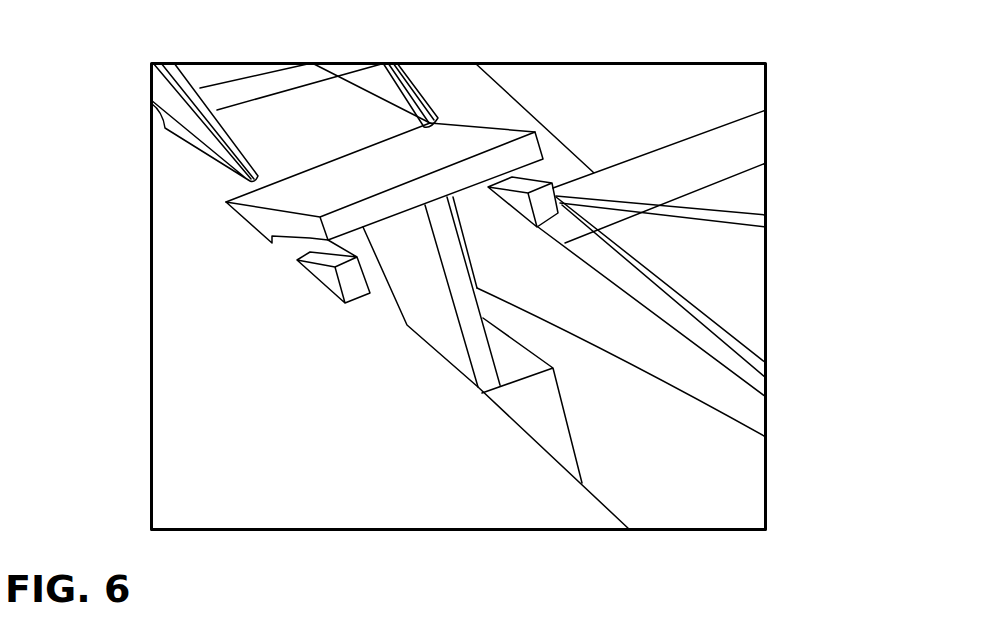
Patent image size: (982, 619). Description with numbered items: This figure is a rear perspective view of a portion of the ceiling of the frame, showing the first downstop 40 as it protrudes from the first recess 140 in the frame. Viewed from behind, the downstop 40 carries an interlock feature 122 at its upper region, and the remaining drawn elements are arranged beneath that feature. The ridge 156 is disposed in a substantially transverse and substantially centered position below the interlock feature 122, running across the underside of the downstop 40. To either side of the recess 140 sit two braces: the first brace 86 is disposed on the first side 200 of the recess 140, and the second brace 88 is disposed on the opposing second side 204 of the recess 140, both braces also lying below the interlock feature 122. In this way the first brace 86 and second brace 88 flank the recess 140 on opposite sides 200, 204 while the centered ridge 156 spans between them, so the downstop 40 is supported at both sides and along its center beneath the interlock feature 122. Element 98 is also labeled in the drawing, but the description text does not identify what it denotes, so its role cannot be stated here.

The first downstop 40 is at (446, 130).
The interlock feature 122 is at (413, 158).
The tubular frame member 98 is at (343, 173).
The second brace 88 is at (590, 177).
The second side 204 is at (563, 241).
The first recess 140 is at (513, 273).
The first brace 86 is at (350, 273).
The first side 200 is at (373, 307).
The ridge 156 is at (428, 285).